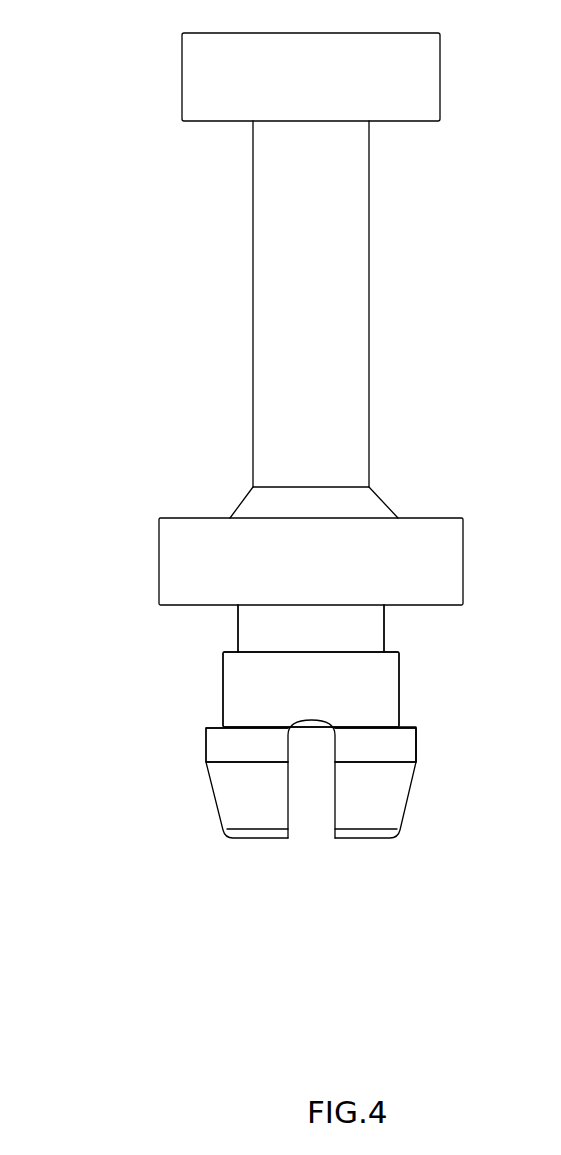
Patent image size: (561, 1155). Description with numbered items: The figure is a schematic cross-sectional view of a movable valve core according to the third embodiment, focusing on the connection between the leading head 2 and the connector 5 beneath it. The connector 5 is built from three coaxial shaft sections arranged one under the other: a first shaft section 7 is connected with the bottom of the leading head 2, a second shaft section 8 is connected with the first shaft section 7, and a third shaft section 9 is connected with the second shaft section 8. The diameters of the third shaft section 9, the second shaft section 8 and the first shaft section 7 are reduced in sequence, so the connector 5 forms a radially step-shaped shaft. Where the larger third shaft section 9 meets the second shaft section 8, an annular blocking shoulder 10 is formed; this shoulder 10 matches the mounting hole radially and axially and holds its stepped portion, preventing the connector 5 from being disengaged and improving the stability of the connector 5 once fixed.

The leading head 2 is at (370, 412).
The connector 5 is at (123, 629).
The first shaft section 7 is at (246, 641).
The second shaft section 8 is at (233, 692).
The third shaft section 9 is at (208, 752).
The annular blocking shoulder 10 is at (408, 727).